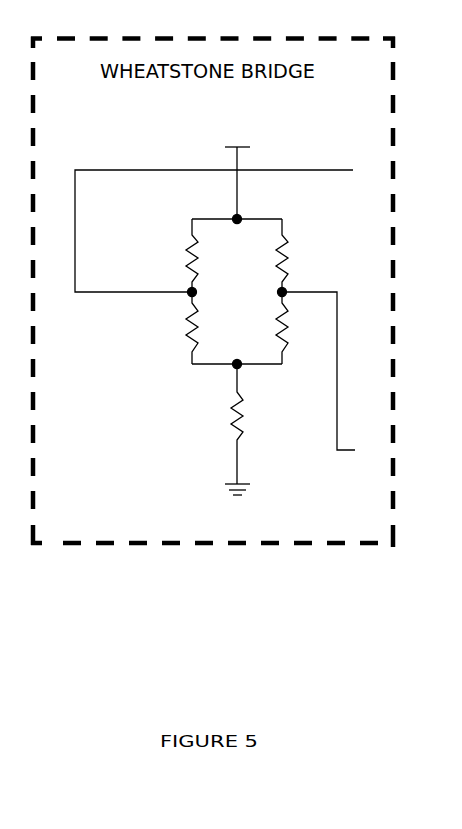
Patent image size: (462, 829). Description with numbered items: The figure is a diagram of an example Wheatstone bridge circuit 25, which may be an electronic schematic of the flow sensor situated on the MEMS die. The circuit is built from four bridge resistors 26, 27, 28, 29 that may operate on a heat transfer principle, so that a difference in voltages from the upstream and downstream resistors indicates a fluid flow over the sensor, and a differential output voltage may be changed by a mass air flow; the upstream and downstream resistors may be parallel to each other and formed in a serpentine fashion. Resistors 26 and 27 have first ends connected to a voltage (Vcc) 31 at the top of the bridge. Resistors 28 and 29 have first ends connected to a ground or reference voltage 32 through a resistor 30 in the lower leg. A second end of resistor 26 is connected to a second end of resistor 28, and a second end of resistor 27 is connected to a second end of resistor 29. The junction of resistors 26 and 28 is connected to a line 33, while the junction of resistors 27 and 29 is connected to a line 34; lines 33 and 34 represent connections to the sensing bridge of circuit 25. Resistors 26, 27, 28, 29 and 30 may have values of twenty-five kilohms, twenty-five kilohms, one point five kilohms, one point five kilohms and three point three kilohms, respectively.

The Wheatstone bridge circuit 25 is at (394, 100).
The resistor 26 is at (284, 223).
The resistor 27 is at (190, 243).
The resistor 28 is at (283, 343).
The resistor 29 is at (190, 347).
The resistor 30 is at (232, 418).
The voltage (Vcc) 31 is at (232, 128).
The ground or reference voltage 32 is at (231, 491).
The line 33 is at (343, 317).
The line 34 is at (330, 168).